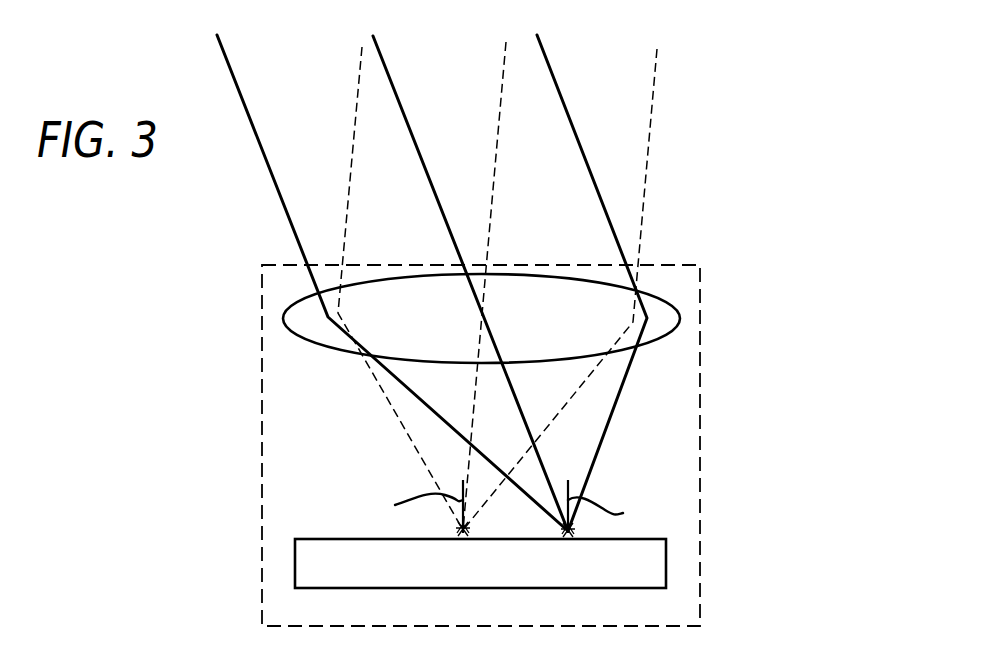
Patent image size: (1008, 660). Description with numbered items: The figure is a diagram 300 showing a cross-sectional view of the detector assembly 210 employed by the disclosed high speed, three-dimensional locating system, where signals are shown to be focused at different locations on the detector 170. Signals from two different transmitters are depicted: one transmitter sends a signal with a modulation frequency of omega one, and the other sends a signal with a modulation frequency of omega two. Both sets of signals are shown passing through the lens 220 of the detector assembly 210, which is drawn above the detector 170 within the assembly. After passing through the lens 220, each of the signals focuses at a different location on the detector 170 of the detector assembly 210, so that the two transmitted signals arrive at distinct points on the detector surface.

The diagram 300 is at (798, 308).
The detector assembly 210 is at (708, 263).
The lens 220 is at (222, 317).
The detector 170 is at (222, 570).